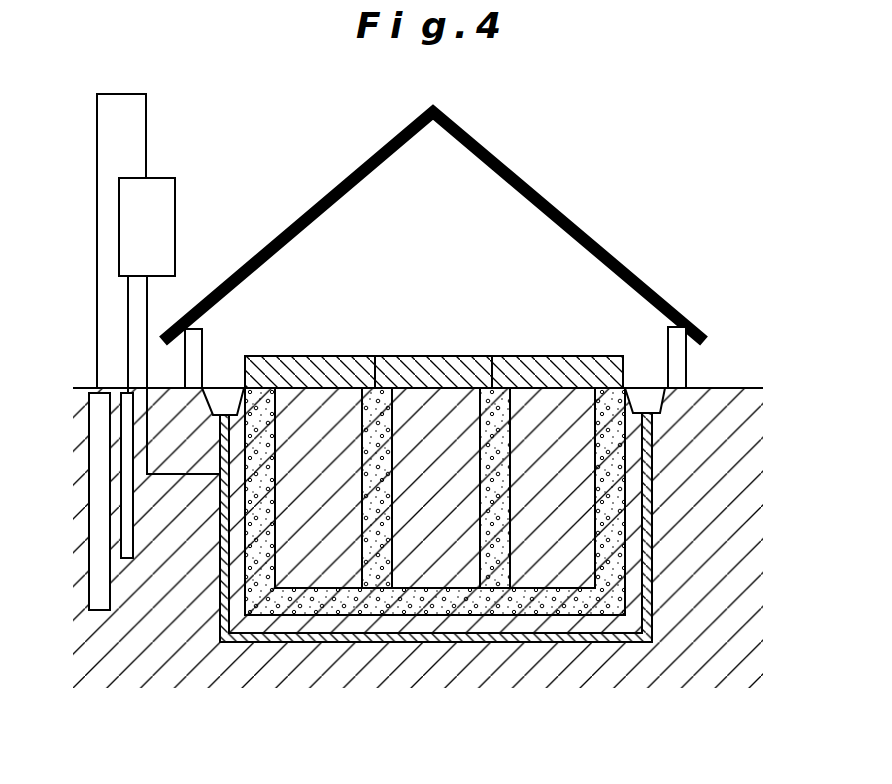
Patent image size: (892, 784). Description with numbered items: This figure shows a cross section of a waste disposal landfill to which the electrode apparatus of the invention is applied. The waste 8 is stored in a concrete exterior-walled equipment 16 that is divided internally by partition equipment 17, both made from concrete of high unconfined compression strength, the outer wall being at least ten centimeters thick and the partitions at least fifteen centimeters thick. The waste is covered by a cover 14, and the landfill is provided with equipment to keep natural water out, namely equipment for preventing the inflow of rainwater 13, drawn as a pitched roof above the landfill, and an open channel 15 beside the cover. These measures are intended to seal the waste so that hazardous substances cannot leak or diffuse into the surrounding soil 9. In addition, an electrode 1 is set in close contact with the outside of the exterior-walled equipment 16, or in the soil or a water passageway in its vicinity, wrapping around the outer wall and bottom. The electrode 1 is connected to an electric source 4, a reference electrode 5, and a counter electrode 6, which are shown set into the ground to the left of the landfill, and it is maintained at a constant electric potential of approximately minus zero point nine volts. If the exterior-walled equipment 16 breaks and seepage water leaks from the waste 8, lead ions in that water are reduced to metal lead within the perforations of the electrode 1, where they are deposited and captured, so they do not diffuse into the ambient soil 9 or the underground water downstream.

The electrode 1 is at (632, 643).
The electric source 4 is at (165, 198).
The reference electrode 5 is at (130, 558).
The counter electrode 6 is at (98, 587).
The waste 8 is at (577, 500).
The soil 9 is at (728, 450).
The equipment for preventing the inflow of rainwater 13 is at (537, 190).
The cover 14 is at (592, 356).
The open channel 15 is at (645, 397).
The exterior-walled equipment 16 is at (555, 607).
The partition equipment 17 is at (377, 568).